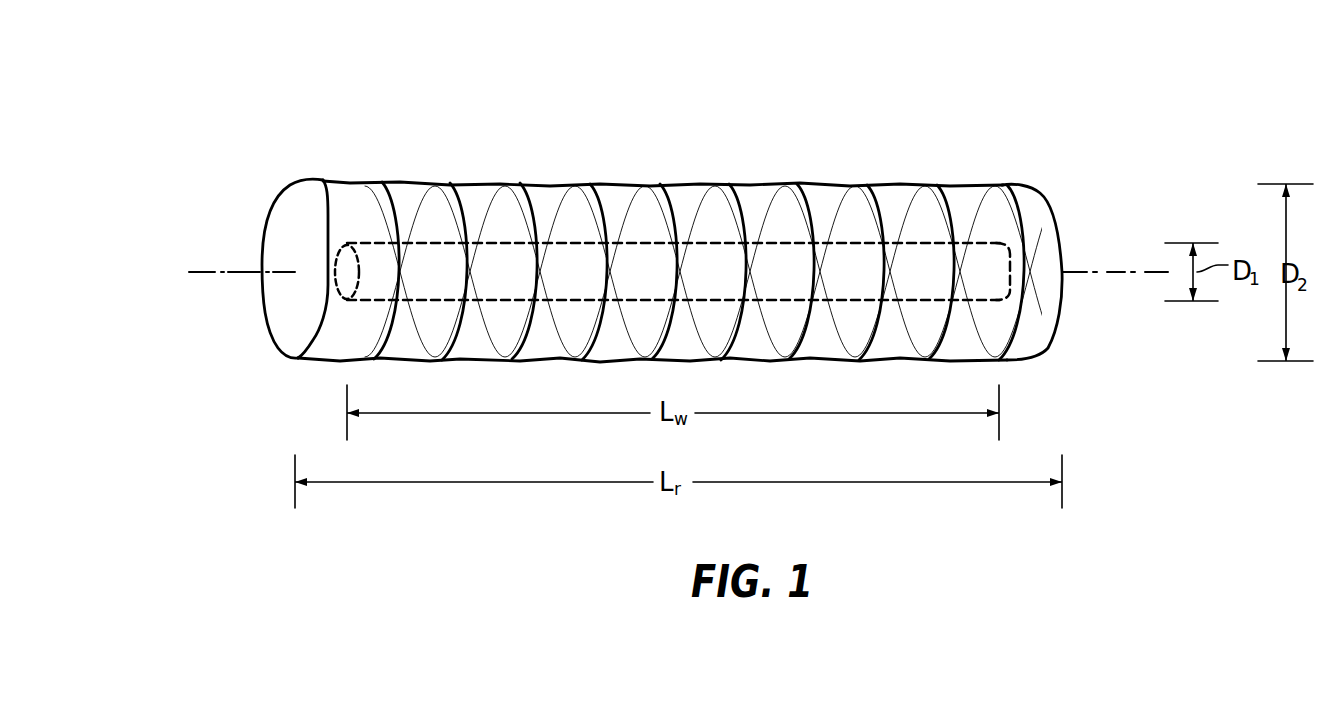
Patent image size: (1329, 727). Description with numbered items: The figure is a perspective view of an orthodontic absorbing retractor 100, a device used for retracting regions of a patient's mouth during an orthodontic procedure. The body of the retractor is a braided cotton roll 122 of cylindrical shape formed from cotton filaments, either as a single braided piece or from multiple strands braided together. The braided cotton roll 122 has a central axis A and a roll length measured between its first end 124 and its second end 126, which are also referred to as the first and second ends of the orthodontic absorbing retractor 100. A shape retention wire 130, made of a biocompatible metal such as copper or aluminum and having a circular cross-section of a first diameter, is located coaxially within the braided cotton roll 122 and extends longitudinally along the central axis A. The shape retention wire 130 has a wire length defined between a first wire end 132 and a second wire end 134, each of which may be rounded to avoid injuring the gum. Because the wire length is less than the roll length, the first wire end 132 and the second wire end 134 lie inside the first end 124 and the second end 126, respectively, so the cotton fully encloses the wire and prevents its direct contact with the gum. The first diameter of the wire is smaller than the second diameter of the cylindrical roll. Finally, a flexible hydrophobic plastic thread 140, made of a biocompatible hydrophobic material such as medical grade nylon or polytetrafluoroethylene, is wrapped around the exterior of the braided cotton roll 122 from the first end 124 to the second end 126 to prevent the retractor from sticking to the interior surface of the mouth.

The orthodontic absorbing retractor 100 is at (940, 57).
The braided cotton roll 122 is at (738, 198).
The first end 124 is at (276, 200).
The second end 126 is at (1053, 207).
The shape retention wire 130 is at (550, 241).
The first wire end 132 is at (335, 247).
The second wire end 134 is at (1012, 263).
The flexible hydrophobic plastic thread 140 is at (670, 214).
The central axis A is at (210, 272).